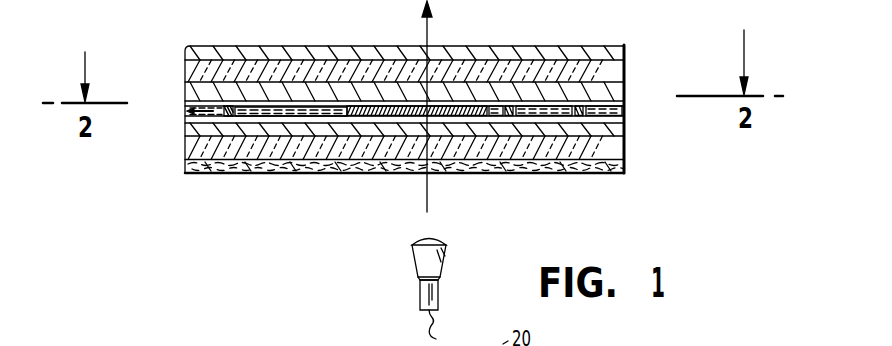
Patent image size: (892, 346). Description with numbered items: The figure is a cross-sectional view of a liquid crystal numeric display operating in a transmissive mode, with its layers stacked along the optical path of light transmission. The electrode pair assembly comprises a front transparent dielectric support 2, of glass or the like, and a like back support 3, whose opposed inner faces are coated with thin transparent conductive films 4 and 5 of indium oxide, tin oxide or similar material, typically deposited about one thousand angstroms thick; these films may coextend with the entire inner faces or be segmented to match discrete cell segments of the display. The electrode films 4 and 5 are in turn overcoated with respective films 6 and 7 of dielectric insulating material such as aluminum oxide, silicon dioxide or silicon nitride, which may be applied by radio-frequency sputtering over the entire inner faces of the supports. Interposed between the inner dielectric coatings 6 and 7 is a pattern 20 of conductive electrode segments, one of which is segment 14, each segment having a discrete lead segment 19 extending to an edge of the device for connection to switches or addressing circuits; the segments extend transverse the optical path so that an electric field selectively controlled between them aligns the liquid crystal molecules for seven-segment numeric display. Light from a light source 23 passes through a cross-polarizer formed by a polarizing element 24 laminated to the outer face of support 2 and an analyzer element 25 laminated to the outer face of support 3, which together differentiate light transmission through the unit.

The front transparent dielectric support 2 is at (187, 152).
The back support 3 is at (195, 72).
The thin transparent conductive film 4 is at (193, 132).
The thin transparent conductive film 5 is at (192, 90).
The dielectric insulating film 6 is at (625, 115).
The dielectric insulating film 7 is at (626, 97).
The conductive electrode segment 14 is at (465, 111).
The lead segment 19 is at (229, 118).
The pattern of conductive electrode segments 20 is at (187, 113).
The light source 23 is at (421, 258).
The polarizing element 24 is at (187, 172).
The analyzer element 25 is at (274, 52).